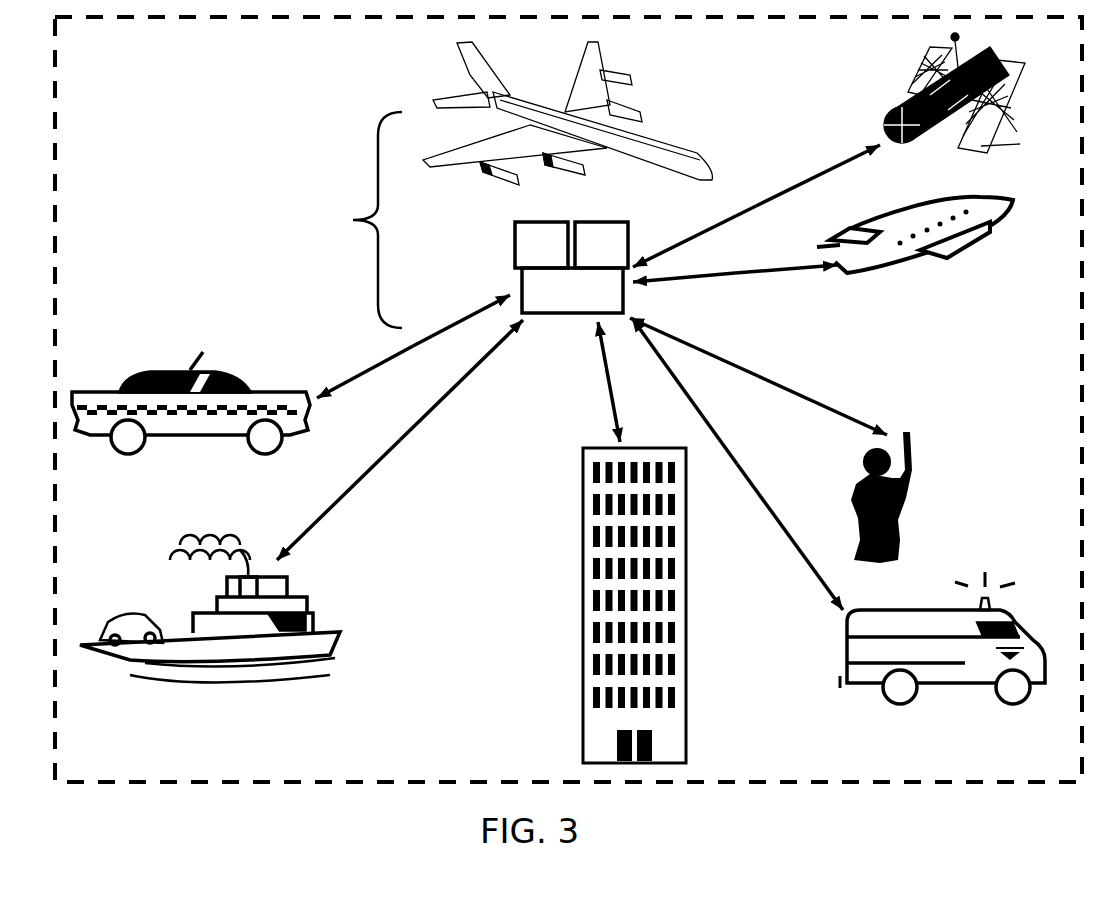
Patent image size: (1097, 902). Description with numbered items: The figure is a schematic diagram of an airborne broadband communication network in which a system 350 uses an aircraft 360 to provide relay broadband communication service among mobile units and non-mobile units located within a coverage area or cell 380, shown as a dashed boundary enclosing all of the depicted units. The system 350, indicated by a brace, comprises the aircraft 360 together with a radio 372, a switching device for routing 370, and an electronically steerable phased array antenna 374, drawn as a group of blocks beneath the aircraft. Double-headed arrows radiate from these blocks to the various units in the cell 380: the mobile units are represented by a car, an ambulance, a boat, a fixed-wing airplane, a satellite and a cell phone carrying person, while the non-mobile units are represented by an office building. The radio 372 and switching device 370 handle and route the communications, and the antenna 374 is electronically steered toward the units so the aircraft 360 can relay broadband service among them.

The system 350 is at (531, 225).
The aircraft 360 is at (663, 135).
The switching device for routing 370 is at (628, 237).
The radio 372 is at (513, 258).
The electronically steerable phased array antenna 374 is at (630, 297).
The coverage area or cell 380 is at (62, 148).